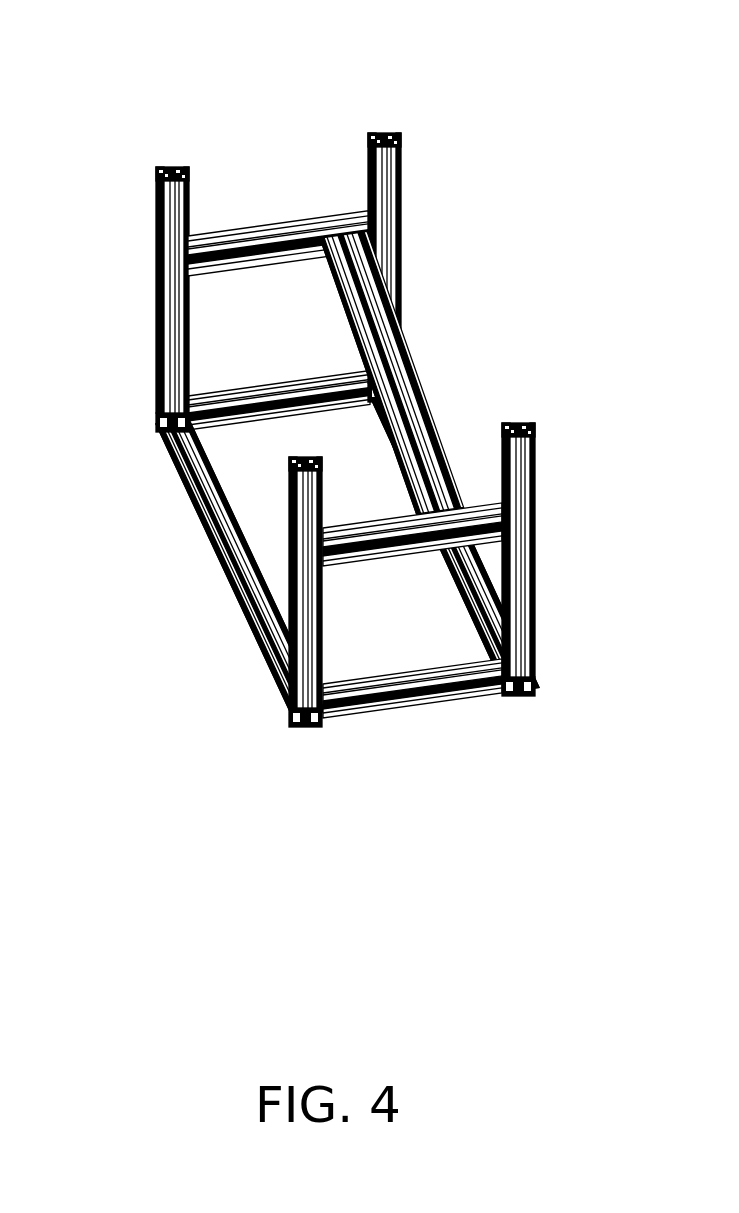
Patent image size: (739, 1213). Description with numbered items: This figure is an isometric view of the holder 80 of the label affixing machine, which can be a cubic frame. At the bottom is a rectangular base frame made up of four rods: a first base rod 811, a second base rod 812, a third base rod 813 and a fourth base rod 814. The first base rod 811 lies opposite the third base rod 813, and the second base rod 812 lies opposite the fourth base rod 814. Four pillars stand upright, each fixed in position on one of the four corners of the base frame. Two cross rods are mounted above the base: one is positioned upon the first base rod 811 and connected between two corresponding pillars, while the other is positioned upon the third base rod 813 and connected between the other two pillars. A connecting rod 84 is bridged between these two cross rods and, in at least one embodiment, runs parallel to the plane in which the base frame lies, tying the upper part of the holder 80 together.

The holder 80 is at (224, 50).
The first base rod 811 is at (228, 408).
The second base rod 812 is at (250, 580).
The third base rod 813 is at (338, 706).
The fourth base rod 814 is at (373, 410).
The connecting rod 84 is at (428, 395).